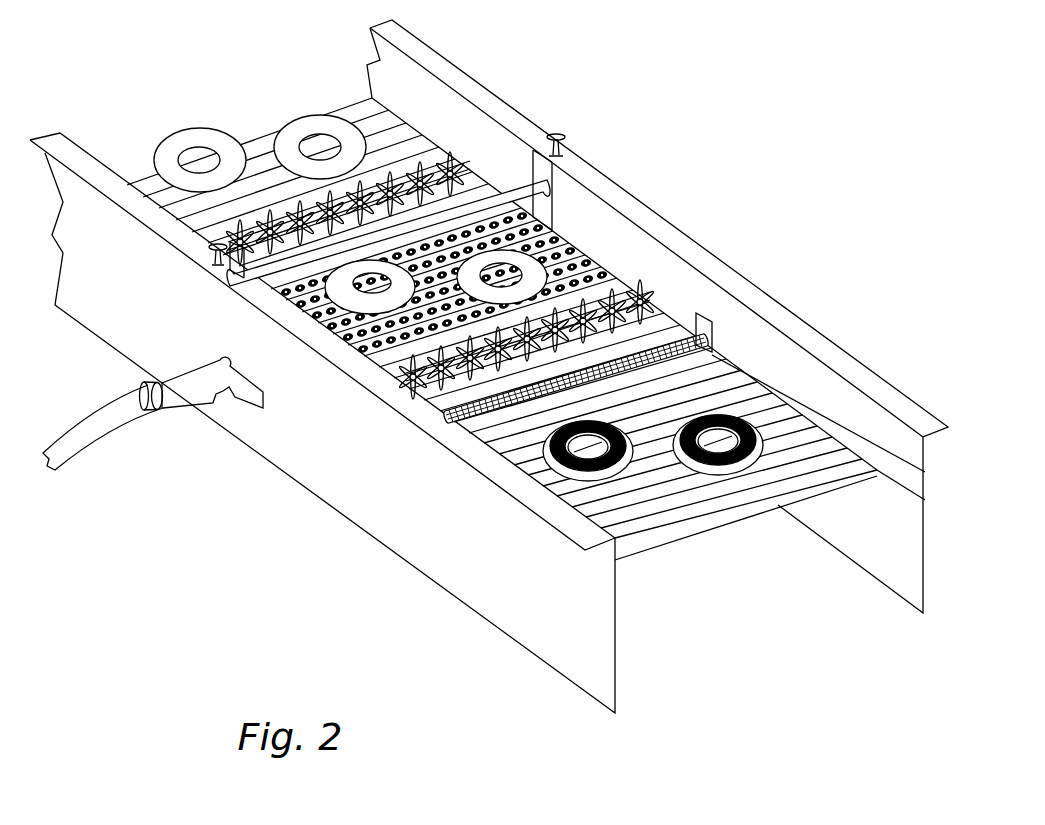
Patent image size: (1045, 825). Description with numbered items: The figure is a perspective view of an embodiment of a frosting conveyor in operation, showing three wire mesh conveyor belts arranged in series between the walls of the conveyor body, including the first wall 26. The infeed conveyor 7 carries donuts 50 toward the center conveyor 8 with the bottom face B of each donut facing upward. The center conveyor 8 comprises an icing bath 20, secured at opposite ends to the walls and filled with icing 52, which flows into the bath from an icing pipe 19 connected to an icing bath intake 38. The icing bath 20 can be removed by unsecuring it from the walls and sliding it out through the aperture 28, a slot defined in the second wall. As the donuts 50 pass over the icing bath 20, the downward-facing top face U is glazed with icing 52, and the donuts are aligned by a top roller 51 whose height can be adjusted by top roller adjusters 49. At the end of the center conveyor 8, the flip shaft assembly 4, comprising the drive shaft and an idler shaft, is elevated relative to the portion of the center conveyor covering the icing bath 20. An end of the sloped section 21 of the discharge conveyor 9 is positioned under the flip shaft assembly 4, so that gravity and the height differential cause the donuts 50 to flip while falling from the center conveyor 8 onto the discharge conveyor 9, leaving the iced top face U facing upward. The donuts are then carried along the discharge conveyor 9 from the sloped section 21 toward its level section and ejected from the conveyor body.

The flip shaft assembly 4 is at (502, 337).
The infeed conveyor 7 is at (262, 133).
The center conveyor 8 is at (498, 267).
The discharge conveyor 9 is at (678, 542).
The icing pipe 19 is at (92, 433).
The icing bath 20 is at (565, 290).
The sloped section 21 is at (850, 430).
The first wall 26 is at (708, 318).
The aperture 28 is at (255, 410).
The icing bath intake 38 is at (192, 388).
The top roller adjusters 49 is at (556, 133).
The donuts 50 is at (510, 246).
The top roller 51 is at (517, 187).
The icing 52 is at (473, 228).
The bottom face B is at (208, 138).
The top face U is at (762, 428).